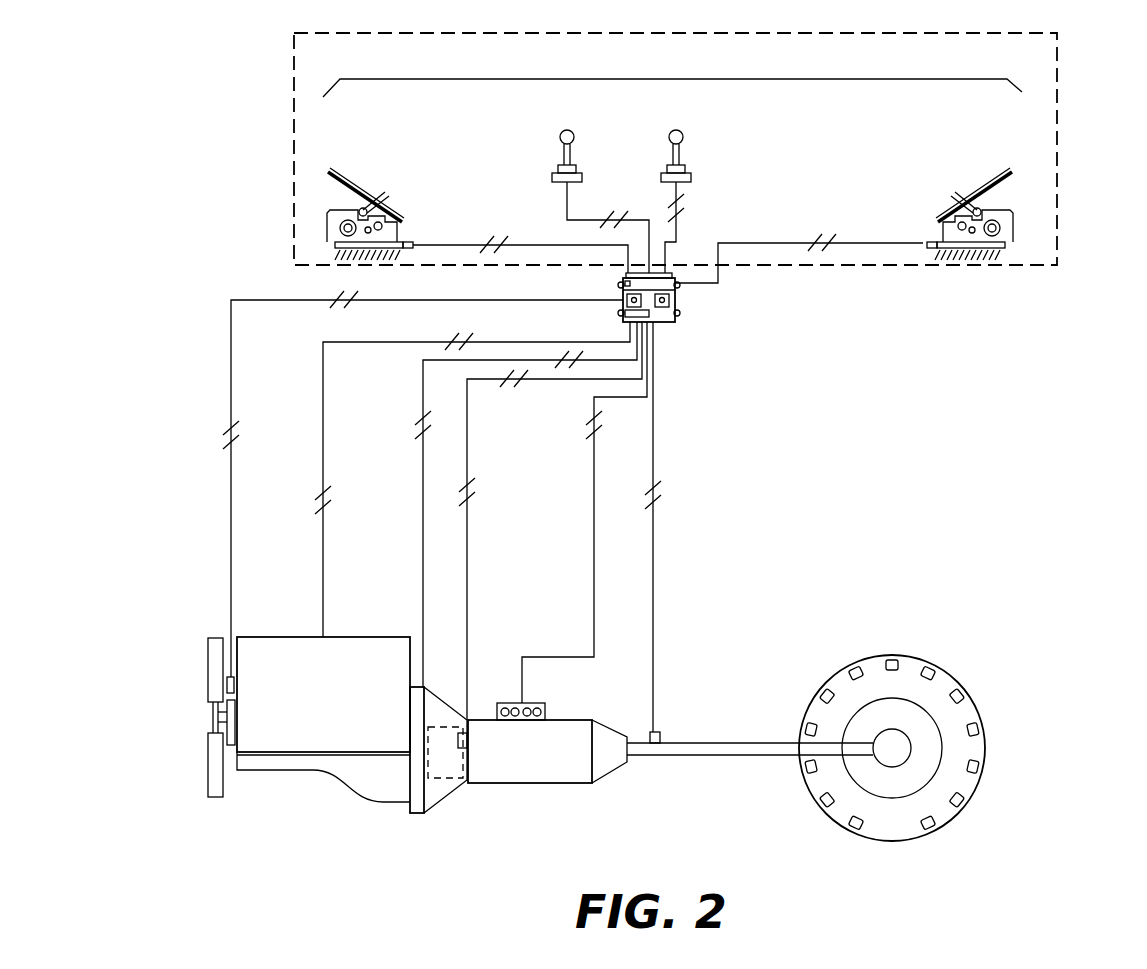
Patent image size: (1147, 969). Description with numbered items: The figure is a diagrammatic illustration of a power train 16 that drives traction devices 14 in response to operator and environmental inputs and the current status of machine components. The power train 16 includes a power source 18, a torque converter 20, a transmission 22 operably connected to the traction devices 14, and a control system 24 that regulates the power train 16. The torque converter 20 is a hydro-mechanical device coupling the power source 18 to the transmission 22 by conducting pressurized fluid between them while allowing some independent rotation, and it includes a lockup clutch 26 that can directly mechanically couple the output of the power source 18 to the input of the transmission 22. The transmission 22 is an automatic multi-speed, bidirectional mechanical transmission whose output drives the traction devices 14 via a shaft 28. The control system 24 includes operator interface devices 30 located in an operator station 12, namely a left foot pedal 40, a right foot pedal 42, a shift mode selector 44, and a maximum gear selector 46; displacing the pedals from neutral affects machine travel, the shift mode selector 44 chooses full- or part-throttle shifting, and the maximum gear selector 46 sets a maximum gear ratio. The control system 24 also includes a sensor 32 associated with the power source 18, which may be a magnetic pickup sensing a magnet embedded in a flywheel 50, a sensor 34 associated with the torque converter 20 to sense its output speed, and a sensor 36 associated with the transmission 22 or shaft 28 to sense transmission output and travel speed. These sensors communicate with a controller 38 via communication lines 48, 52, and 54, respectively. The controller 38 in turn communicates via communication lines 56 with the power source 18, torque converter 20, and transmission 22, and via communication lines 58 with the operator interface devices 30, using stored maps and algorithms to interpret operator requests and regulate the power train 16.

The operator station 12 is at (1058, 160).
The traction devices 14 is at (932, 668).
The power train 16 is at (188, 198).
The power source 18 is at (338, 708).
The torque converter 20 is at (448, 800).
The transmission 22 is at (542, 765).
The control system 24 is at (814, 370).
The lockup clutch 26 is at (445, 727).
The shaft 28 is at (653, 757).
The operator interface devices 30 is at (690, 77).
The sensor 32 is at (227, 683).
The sensor 34 is at (470, 745).
The sensor 36 is at (662, 733).
The controller 38 is at (678, 305).
The left foot pedal 40 is at (352, 170).
The right foot pedal 42 is at (970, 186).
The shift mode selector 44 is at (574, 132).
The maximum gear selector 46 is at (683, 132).
The communication line 48 is at (231, 380).
The flywheel 50 is at (232, 748).
The communication line 52 is at (468, 598).
The communication line 54 is at (654, 541).
The communication lines 56 is at (323, 555).
The communication lines 58 is at (567, 203).